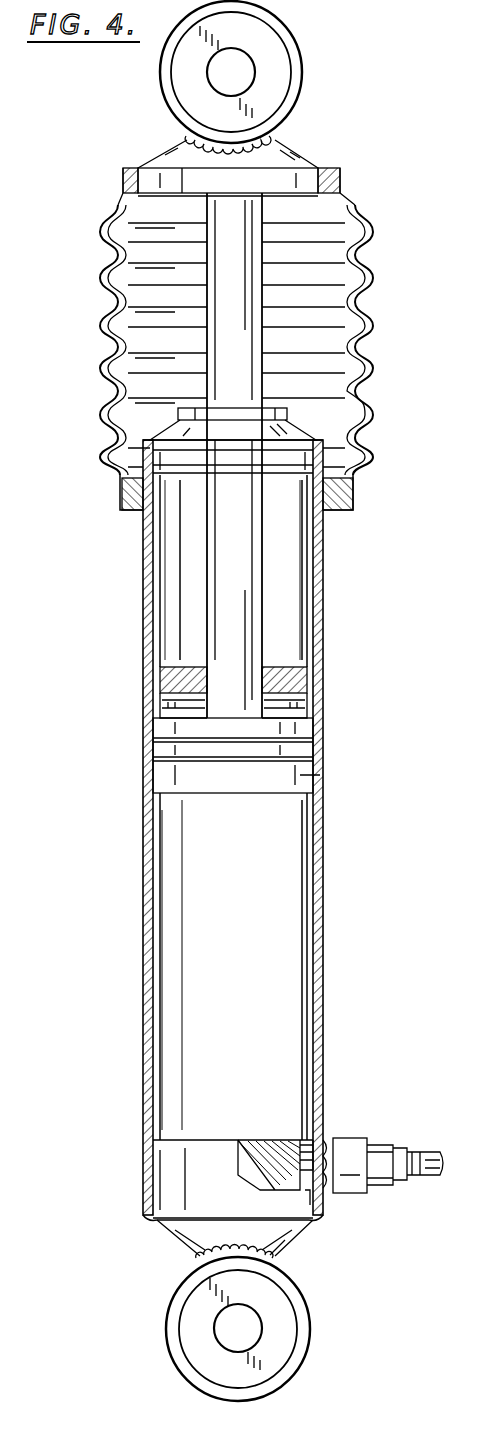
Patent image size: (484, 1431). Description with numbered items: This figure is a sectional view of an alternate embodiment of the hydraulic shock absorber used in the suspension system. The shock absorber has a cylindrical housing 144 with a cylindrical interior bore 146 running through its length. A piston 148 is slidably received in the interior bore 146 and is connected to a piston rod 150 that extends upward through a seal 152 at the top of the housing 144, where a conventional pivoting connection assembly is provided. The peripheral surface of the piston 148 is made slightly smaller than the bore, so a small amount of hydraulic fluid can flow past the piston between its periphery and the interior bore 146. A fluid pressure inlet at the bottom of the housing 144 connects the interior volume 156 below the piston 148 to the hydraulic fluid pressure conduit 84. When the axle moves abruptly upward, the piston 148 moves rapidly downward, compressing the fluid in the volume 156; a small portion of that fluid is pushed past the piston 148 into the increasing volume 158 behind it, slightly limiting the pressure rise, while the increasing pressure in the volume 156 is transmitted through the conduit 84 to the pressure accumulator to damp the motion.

The seal 152 is at (296, 425).
The piston rod 150 is at (253, 590).
The increasing volume 158 is at (290, 633).
The piston 148 is at (310, 780).
The cylindrical housing 144 is at (322, 866).
The cylindrical interior bore 146 is at (320, 946).
The interior volume 156 is at (290, 1030).
The hydraulic fluid pressure conduit 84 is at (437, 1150).